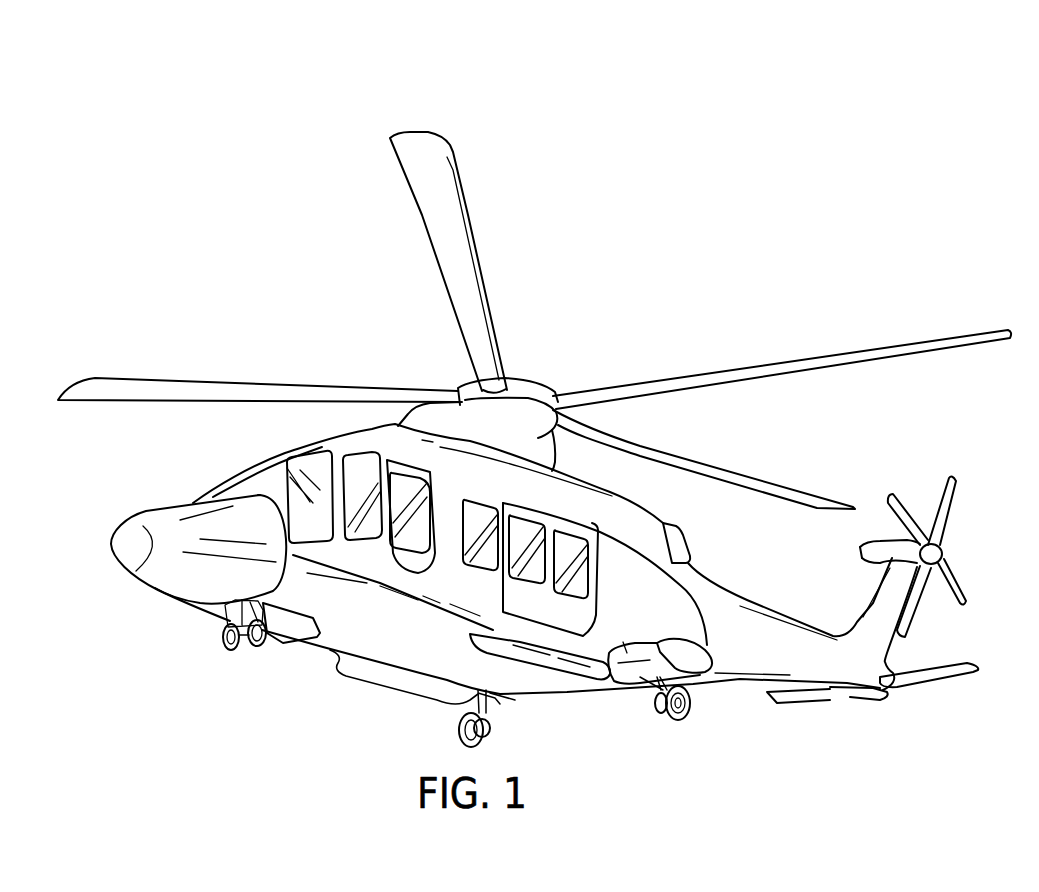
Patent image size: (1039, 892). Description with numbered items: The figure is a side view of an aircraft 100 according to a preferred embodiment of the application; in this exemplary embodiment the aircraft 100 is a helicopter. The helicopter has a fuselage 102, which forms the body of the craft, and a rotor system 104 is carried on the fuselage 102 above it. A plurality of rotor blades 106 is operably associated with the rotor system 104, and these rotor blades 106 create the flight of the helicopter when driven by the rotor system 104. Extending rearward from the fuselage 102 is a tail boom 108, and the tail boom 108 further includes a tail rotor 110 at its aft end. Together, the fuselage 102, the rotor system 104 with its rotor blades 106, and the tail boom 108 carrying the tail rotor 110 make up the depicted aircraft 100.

The aircraft 100 is at (206, 125).
The fuselage 102 is at (331, 645).
The rotor system 104 is at (542, 357).
The rotor blades 106 is at (767, 376).
The tail boom 108 is at (740, 672).
The tail rotor 110 is at (947, 523).